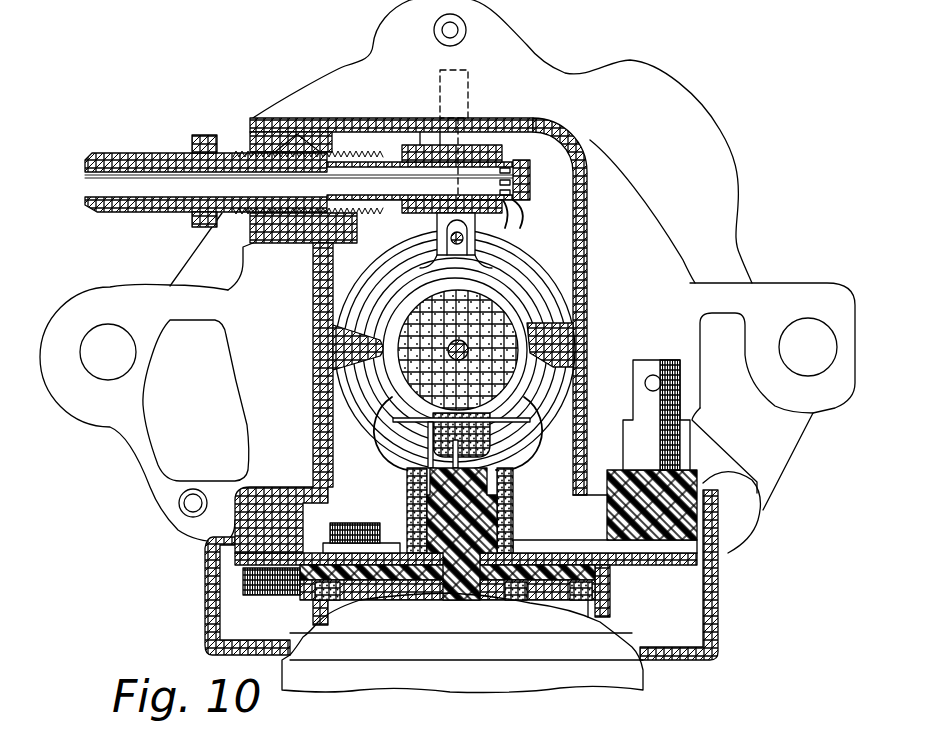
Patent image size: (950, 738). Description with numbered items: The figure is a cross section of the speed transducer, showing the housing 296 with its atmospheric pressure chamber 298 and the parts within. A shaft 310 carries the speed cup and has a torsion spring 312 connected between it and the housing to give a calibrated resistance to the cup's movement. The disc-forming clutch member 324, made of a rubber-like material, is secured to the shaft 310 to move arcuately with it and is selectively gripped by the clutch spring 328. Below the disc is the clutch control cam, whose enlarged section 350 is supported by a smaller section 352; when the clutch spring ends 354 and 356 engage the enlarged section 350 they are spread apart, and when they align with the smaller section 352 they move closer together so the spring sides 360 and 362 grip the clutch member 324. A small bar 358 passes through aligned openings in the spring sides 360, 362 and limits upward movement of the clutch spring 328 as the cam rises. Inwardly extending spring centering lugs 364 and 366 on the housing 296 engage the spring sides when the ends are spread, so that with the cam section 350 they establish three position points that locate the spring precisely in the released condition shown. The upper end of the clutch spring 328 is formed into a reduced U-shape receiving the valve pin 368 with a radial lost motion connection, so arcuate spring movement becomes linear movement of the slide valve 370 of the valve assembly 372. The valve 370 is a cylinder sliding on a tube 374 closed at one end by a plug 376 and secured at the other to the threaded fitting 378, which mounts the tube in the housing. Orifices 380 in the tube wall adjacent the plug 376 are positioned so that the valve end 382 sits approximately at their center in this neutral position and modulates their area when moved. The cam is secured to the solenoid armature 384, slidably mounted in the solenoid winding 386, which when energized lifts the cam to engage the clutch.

The housing 296 is at (590, 140).
The atmospheric pressure chamber 298 is at (563, 170).
The shaft 310 is at (455, 341).
The torsion spring 312 is at (333, 310).
The clutch member 324 is at (495, 298).
The clutch spring 328 is at (399, 274).
The enlarged section 350 is at (497, 493).
The smaller section 352 is at (447, 530).
The clutch spring end 354 is at (412, 477).
The clutch spring end 356 is at (515, 472).
The bar 358 is at (487, 410).
The spring side 360 is at (392, 398).
The spring side 362 is at (522, 400).
The spring centering lug 364 is at (355, 353).
The spring centering lug 366 is at (568, 350).
The valve pin 368 is at (447, 237).
The slide valve 370 is at (420, 146).
The valve assembly 372 is at (500, 133).
The tube 374 is at (340, 150).
The plug 376 is at (535, 184).
The fitting 378 is at (243, 152).
The orifices 380 is at (520, 207).
The valve end 382 is at (503, 215).
The solenoid armature 384 is at (447, 597).
The solenoid winding 386 is at (542, 593).